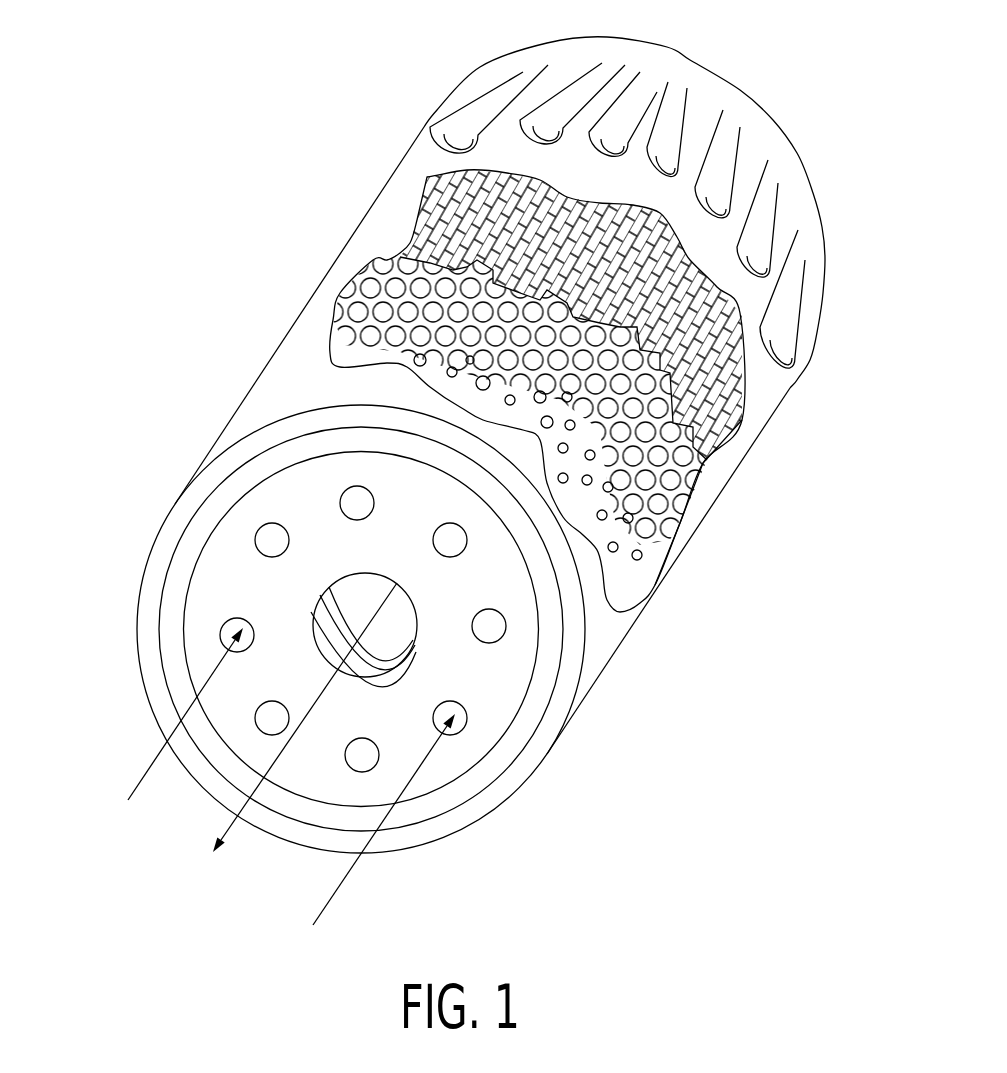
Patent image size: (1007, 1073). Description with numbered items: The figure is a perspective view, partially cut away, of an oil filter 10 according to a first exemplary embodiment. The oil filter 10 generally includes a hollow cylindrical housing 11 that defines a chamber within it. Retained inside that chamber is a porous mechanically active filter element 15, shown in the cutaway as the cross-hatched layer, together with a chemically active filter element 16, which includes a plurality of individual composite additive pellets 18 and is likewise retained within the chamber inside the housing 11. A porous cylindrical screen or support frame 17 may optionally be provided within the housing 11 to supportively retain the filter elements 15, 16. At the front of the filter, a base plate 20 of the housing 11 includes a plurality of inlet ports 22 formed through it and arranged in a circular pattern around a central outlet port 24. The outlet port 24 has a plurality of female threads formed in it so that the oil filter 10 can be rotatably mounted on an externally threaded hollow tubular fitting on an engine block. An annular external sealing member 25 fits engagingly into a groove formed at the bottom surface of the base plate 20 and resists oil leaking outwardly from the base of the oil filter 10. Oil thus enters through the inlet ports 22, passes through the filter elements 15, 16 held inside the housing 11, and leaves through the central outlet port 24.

The oil filter 10 is at (296, 95).
The hollow cylindrical housing 11 is at (292, 382).
The porous mechanically active filter element 15 is at (433, 213).
The chemically active filter element 16 is at (653, 467).
The porous cylindrical screen or support frame 17 is at (637, 533).
The composite additive pellets 18 is at (364, 333).
The base plate 20 is at (207, 600).
The inlet ports 22 is at (500, 634).
The central outlet port 24 is at (365, 576).
The annular external sealing member 25 is at (457, 794).